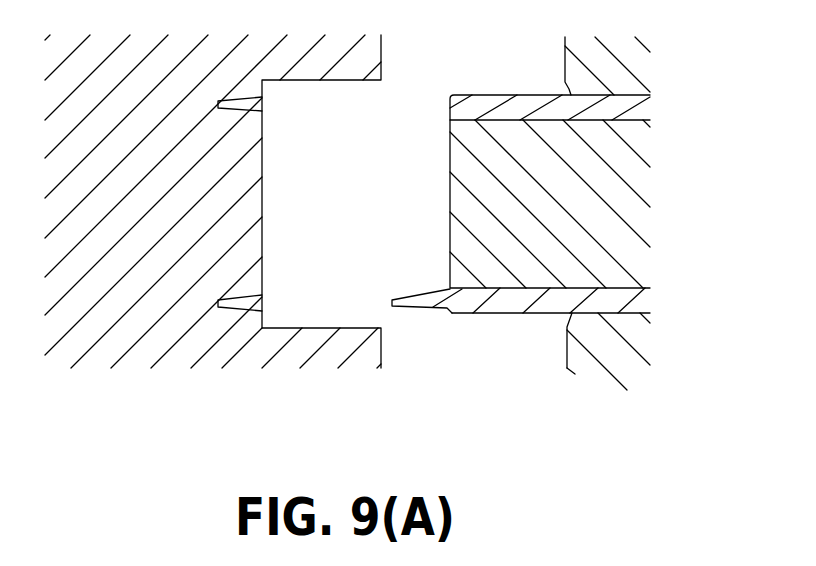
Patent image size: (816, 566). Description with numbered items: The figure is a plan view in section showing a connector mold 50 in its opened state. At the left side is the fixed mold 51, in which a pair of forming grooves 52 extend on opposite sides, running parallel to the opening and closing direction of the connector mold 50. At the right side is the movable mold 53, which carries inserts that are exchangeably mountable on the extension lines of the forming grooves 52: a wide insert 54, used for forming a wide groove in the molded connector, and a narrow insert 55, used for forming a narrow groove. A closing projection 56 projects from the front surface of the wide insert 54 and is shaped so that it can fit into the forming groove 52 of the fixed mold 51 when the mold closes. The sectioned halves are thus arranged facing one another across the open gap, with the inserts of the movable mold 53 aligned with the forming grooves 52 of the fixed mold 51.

The connector mold 50 is at (427, 420).
The fixed mold 51 is at (193, 345).
The forming grooves 52 is at (255, 104).
The movable mold 53 is at (618, 353).
The wide insert 54 is at (650, 298).
The narrow insert 55 is at (651, 98).
The closing projection 56 is at (415, 308).